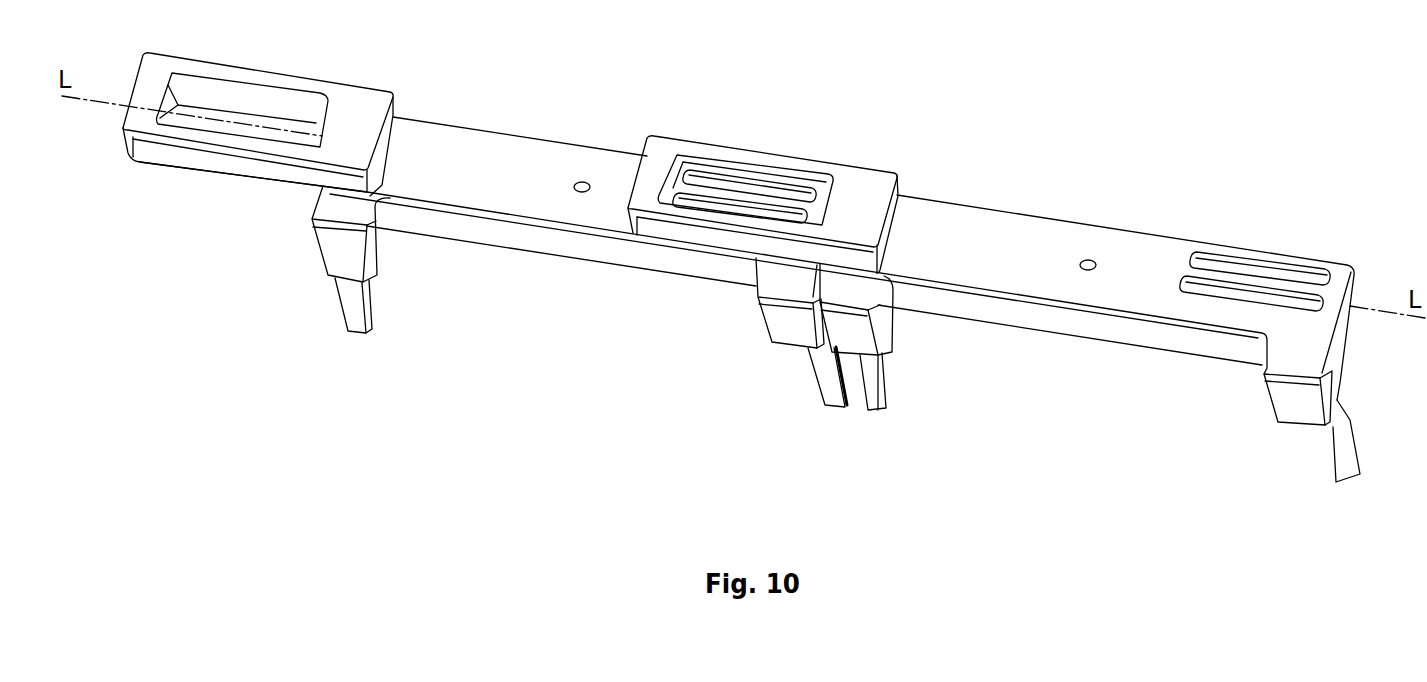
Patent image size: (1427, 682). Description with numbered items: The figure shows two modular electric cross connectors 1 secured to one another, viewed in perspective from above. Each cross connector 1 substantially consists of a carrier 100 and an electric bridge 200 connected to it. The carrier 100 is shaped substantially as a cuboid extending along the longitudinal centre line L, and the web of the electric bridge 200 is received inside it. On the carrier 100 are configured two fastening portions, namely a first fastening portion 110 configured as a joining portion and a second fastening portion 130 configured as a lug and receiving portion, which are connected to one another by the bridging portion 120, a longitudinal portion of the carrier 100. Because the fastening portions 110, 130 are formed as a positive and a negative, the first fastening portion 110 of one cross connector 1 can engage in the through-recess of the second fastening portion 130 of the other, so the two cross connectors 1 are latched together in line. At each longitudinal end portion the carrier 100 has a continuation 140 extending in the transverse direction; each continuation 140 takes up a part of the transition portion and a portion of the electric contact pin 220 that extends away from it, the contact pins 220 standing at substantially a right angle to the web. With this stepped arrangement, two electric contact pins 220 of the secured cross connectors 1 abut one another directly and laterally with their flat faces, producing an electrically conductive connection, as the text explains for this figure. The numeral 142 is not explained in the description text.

The modular electric cross connector 1 is at (447, 373).
The carrier 100 is at (540, 138).
The first fastening portion 110 is at (767, 182).
The bridging portion 120 is at (492, 147).
The second fastening portion 130 is at (280, 82).
The continuation 140 is at (335, 255).
The side flange 142 is at (545, 244).
The electric bridge 200 is at (776, 409).
The electric contact pin 220 is at (347, 312).